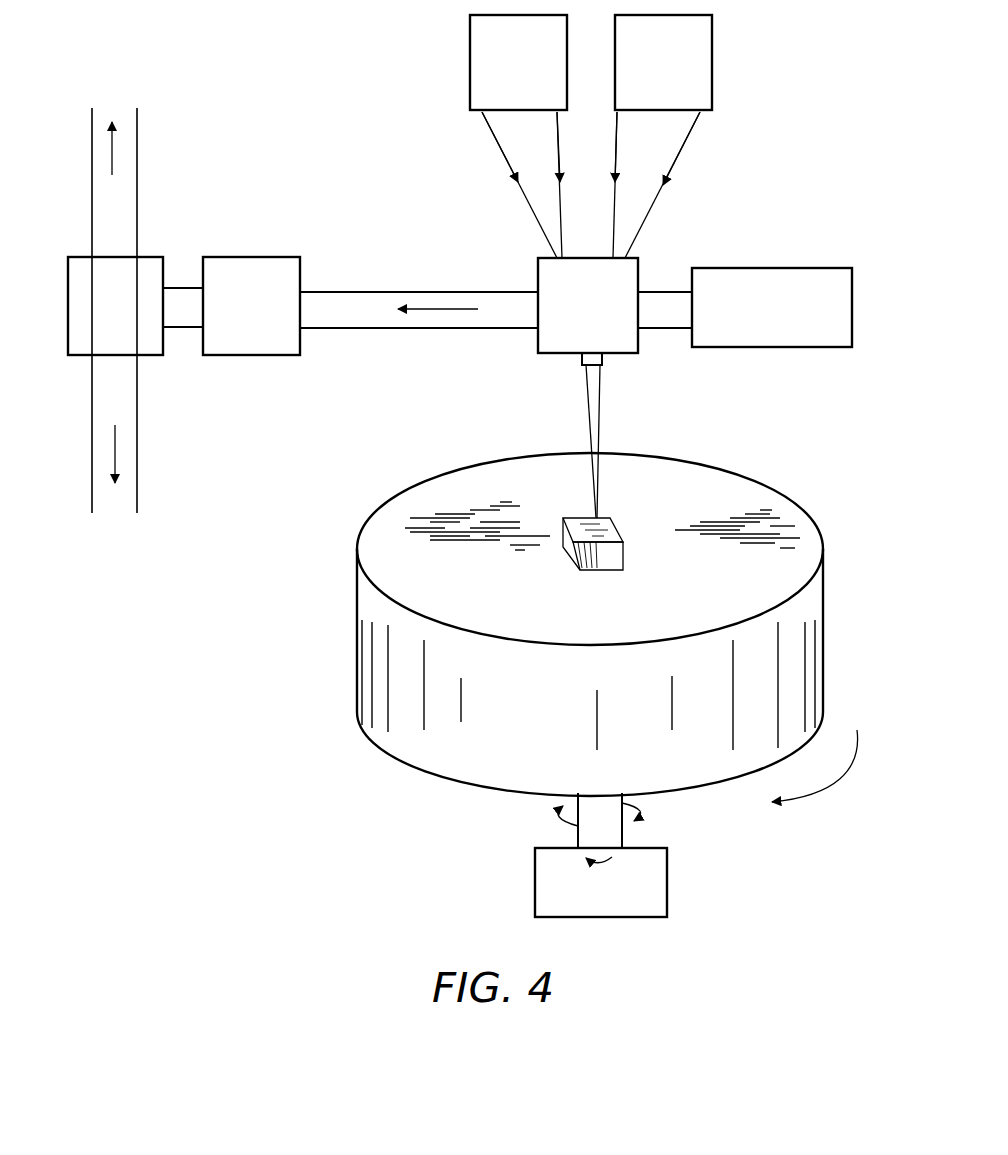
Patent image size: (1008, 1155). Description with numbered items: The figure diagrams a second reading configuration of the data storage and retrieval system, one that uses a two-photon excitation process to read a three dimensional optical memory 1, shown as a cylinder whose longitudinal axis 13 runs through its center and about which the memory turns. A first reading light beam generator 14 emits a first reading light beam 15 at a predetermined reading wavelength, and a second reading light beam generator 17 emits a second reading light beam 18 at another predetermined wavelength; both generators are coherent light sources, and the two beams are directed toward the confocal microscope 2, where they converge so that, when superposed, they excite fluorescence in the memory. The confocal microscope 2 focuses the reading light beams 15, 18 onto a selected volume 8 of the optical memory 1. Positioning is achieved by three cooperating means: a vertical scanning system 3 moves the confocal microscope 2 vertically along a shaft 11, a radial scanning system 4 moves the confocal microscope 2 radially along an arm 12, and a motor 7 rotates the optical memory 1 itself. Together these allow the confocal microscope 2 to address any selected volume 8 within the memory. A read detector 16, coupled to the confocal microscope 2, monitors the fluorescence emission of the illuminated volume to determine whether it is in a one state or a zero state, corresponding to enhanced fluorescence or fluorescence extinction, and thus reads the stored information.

The optical memory 1 is at (824, 666).
The confocal microscope 2 is at (641, 279).
The vertical scanning system 3 is at (157, 356).
The radial scanning system 4 is at (290, 258).
The motor 7 is at (668, 876).
The selected volume 8 is at (620, 542).
The shaft 11 is at (137, 220).
The arm 12 is at (381, 285).
The longitudinal axis 13 is at (578, 838).
The first reading light beam generator 14 is at (470, 72).
The first reading light beam 15 is at (520, 186).
The read detector 16 is at (720, 348).
The second reading light beam generator 17 is at (712, 70).
The second reading light beam 18 is at (672, 172).